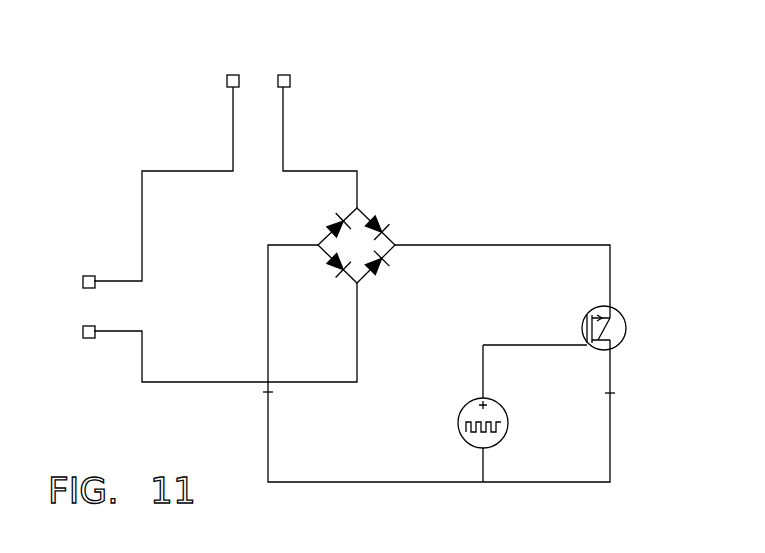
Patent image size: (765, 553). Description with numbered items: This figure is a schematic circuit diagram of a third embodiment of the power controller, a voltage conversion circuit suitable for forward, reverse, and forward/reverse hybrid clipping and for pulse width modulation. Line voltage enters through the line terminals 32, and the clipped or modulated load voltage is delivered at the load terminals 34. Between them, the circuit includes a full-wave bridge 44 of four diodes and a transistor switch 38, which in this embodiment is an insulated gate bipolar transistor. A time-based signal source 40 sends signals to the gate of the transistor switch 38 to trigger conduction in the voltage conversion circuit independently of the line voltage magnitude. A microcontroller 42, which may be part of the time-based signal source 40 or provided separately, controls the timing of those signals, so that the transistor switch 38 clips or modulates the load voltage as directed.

The line terminals 32 is at (80, 281).
The load terminals 34 is at (275, 77).
The transistor switch 38 is at (626, 318).
The time-based signal source 40 is at (458, 430).
The microcontroller 42 is at (508, 432).
The full-wave bridge 44 is at (322, 255).